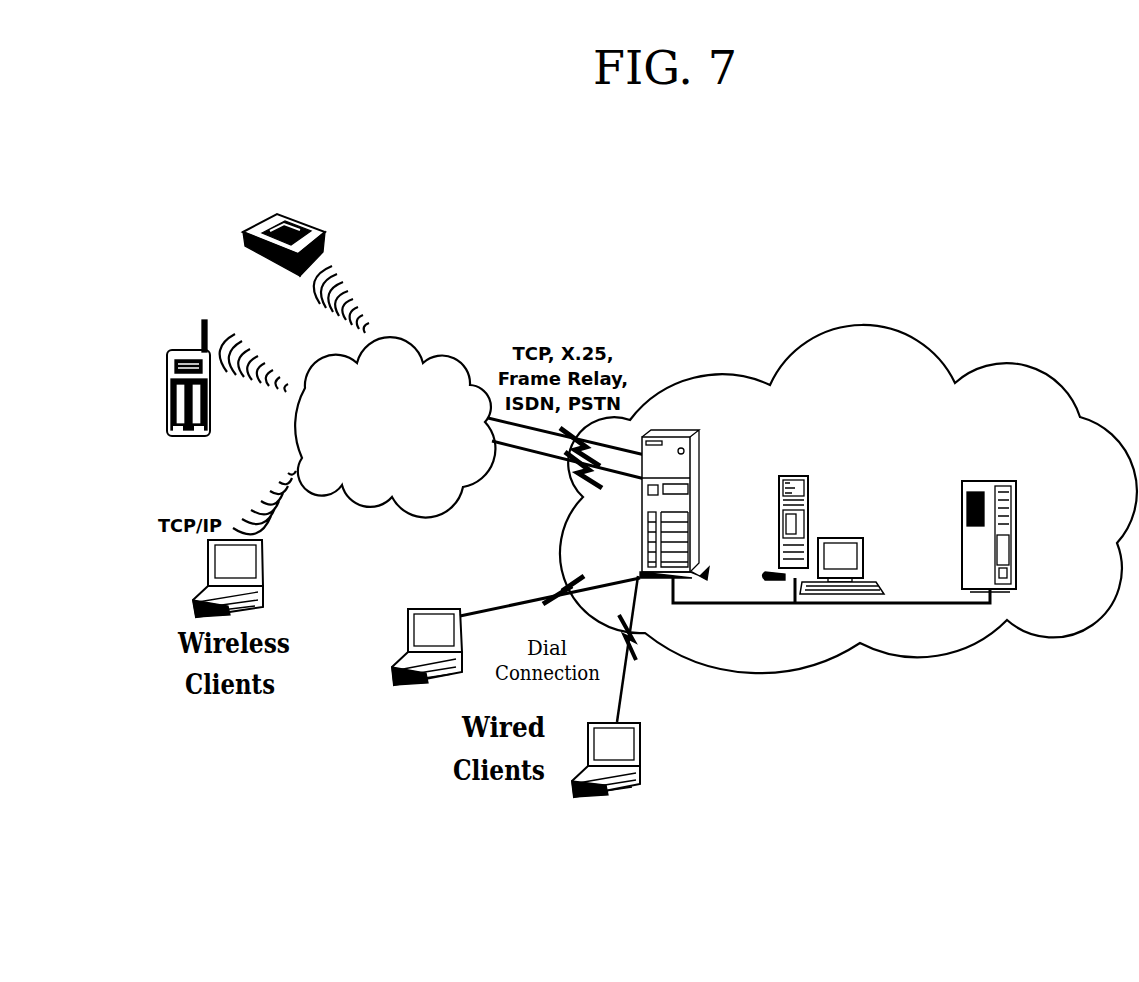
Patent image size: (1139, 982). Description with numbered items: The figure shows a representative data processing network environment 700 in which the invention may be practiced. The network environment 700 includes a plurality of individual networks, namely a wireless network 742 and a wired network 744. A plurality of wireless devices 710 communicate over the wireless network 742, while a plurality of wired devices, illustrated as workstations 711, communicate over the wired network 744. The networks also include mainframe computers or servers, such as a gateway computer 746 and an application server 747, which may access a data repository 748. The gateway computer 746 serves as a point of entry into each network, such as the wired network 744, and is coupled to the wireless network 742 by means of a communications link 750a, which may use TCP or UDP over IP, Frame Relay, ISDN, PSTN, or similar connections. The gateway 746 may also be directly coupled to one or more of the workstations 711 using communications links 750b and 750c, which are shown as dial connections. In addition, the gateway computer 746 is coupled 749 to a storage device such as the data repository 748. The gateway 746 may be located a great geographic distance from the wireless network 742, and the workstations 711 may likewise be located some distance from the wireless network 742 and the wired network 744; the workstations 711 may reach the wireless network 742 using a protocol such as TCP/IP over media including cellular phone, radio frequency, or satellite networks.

The data processing network environment 700 is at (670, 149).
The wireless devices 710 is at (272, 403).
The workstations 711 is at (513, 721).
The wireless network 742 is at (395, 420).
The wired network 744 is at (848, 484).
The gateway computer 746 is at (705, 487).
The application server 747 is at (824, 518).
The data repository 748 is at (1015, 536).
The coupling to storage device 749 is at (831, 606).
The communications link 750a is at (566, 453).
The communications link 750b is at (550, 589).
The communications link 750c is at (654, 649).